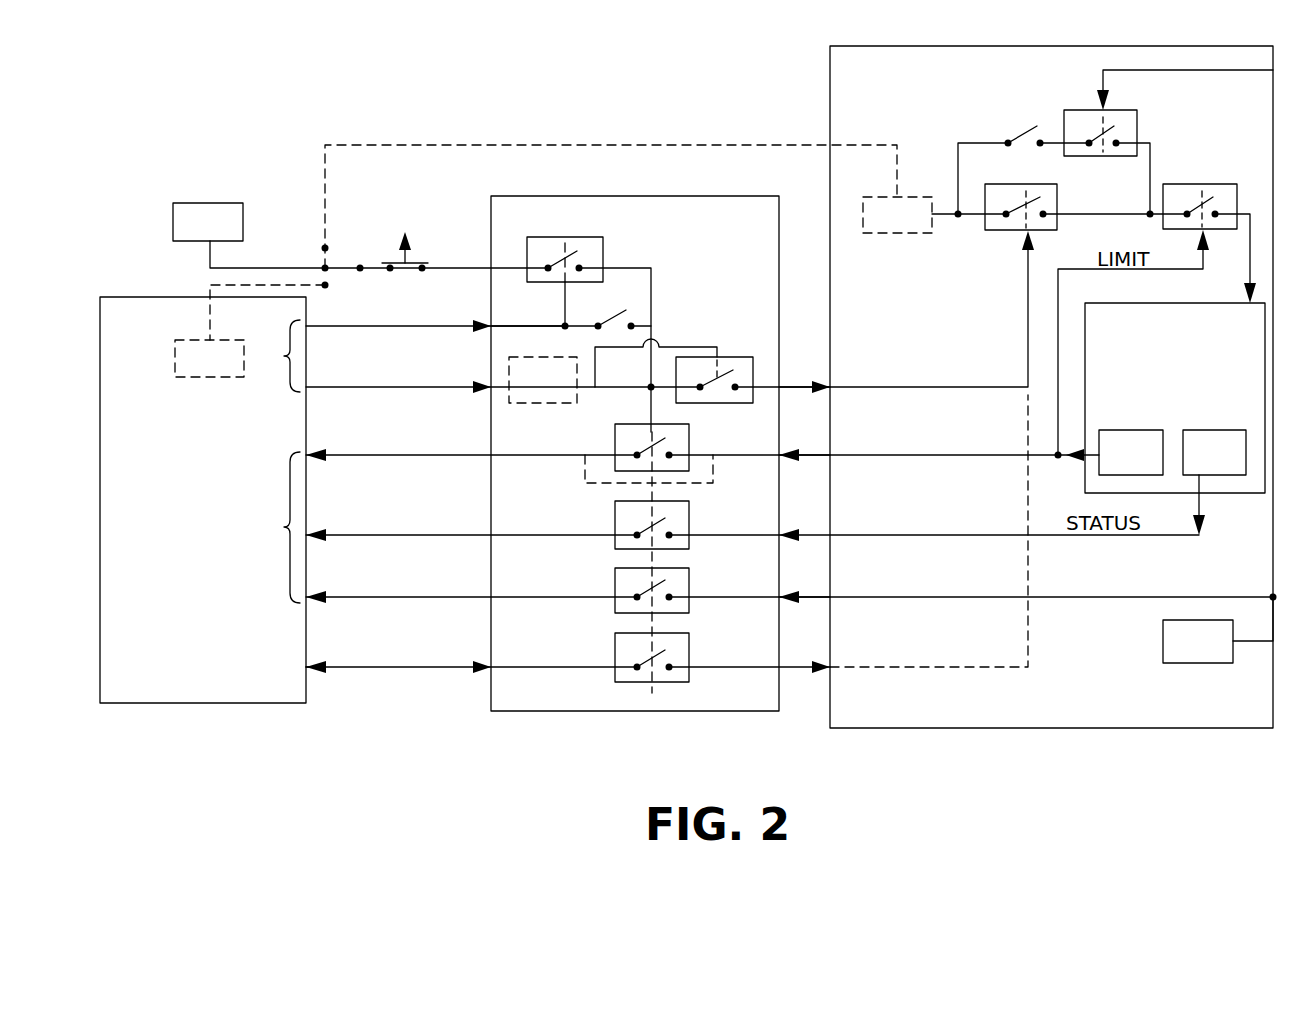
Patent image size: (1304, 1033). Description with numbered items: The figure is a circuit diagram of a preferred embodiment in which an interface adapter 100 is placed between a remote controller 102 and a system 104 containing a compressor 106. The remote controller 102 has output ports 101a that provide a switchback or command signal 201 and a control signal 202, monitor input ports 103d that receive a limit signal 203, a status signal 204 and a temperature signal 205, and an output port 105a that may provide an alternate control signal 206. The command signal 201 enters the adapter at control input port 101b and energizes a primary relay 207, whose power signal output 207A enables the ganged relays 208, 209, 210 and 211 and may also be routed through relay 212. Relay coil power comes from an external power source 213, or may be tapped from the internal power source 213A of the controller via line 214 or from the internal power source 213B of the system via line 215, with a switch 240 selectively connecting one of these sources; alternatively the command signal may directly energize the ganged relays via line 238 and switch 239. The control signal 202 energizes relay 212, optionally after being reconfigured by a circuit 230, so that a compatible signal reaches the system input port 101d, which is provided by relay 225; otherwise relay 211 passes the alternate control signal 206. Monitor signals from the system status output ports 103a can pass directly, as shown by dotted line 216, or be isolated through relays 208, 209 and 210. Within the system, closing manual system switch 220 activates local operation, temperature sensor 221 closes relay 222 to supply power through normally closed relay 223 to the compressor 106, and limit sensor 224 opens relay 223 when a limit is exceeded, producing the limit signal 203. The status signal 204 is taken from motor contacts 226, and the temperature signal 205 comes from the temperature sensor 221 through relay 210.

The interface adapter 100 is at (715, 712).
The remote controller 102 is at (232, 712).
The system 104 is at (1077, 730).
The compressor 106 is at (1240, 493).
The output ports 101a is at (274, 356).
The control input port 101b is at (520, 314).
The input port 101d is at (830, 387).
The status output ports 103a is at (830, 455).
The monitor input ports 103d is at (266, 527).
The output port 105a is at (306, 667).
The command signal 201 is at (318, 329).
The control signal 202 is at (318, 390).
The limit signal 203 is at (338, 458).
The status signal 204 is at (342, 538).
The temperature signal 205 is at (342, 600).
The alternate control signal 206 is at (340, 670).
The primary relay 207 is at (580, 237).
The power signal output 207A is at (622, 264).
The relay 208 is at (615, 436).
The relay 209 is at (615, 518).
The relay 210 is at (615, 583).
The relay 211 is at (615, 650).
The relay 212 is at (740, 357).
The external power source 213 is at (243, 220).
The internal power source 213A is at (225, 378).
The internal power source 213B is at (925, 233).
The line 214 is at (205, 290).
The line 215 is at (440, 145).
The dotted line 216 is at (578, 470).
The manual system switch 220 is at (1030, 130).
The temperature sensor 221 is at (1210, 663).
The relay 222 is at (1073, 157).
The normally closed relay 223 is at (1236, 184).
The limit sensor 224 is at (1099, 466).
The relay 225 is at (1008, 231).
The motor contacts 226 is at (1250, 411).
The circuit 230 is at (514, 357).
The line 238 is at (588, 324).
The switch 239 is at (628, 316).
The switch 240 is at (345, 271).